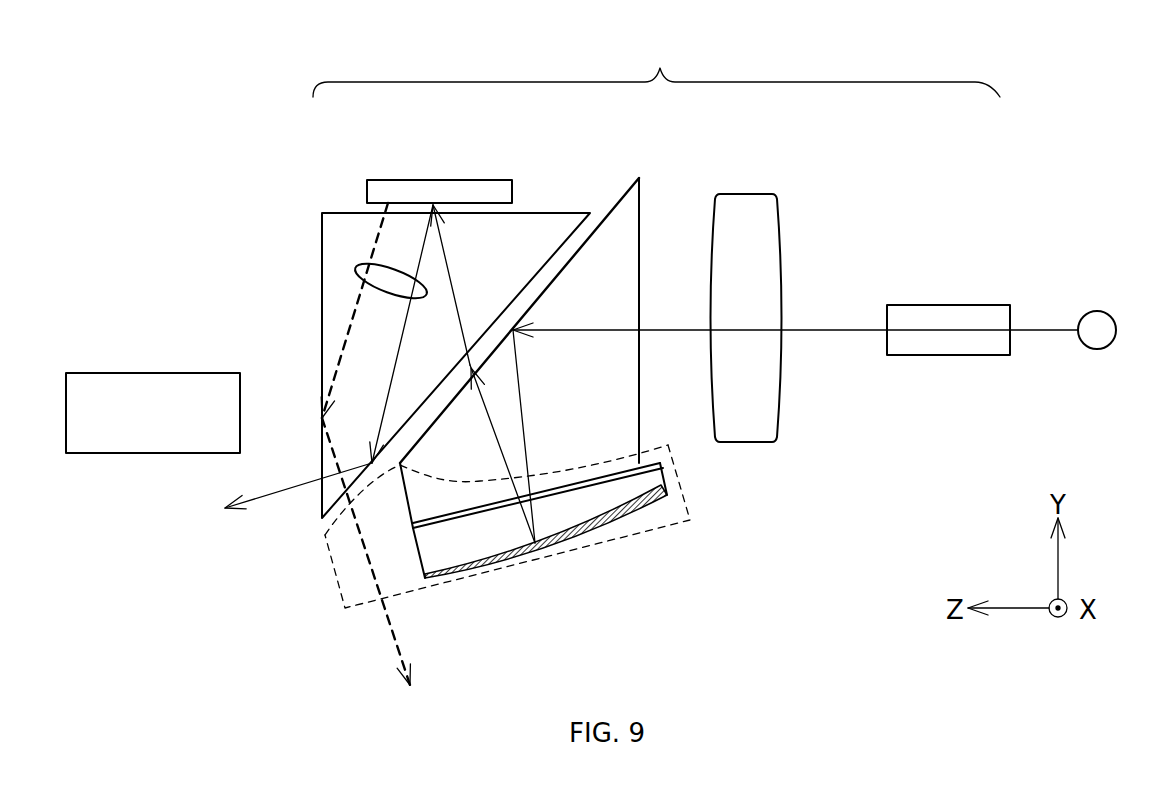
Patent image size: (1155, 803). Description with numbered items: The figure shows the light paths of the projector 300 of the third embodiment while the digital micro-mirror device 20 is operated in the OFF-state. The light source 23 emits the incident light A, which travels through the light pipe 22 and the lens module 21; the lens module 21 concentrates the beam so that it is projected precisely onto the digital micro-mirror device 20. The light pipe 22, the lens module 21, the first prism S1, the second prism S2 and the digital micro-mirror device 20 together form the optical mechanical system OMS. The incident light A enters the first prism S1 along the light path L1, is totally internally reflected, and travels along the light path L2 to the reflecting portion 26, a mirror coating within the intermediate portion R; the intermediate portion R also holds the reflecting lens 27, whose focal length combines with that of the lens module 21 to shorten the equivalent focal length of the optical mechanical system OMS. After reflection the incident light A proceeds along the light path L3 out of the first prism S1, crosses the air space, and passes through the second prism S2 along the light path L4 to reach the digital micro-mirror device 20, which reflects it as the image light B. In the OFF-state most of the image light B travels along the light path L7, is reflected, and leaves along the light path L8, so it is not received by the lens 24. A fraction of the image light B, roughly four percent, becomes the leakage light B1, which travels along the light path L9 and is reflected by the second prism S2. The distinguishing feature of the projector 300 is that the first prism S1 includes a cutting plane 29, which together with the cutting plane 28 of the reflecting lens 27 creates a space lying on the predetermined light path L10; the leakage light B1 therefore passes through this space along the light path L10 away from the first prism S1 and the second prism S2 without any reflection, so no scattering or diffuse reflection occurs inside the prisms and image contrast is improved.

The projector 300 is at (190, 98).
The digital micro-mirror device 20 is at (441, 180).
The lens module 21 is at (748, 194).
The light pipe 22 is at (948, 305).
The light source 23 is at (1100, 311).
The lens 24 is at (139, 428).
The reflecting portion 26 is at (627, 523).
The reflecting lens 27 is at (567, 513).
The cutting plane 28 is at (425, 577).
The cutting plane 29 is at (403, 493).
The optical mechanical system OMS is at (656, 62).
The first prism S1 is at (639, 413).
The second prism S2 is at (322, 259).
The incident light A is at (838, 330).
The image light B is at (355, 268).
The leakage light B1 is at (397, 640).
The intermediate portion R is at (335, 577).
The light path L1 is at (795, 318).
The light path L2 is at (534, 436).
The light path L3 is at (499, 454).
The light path L4 is at (461, 285).
The light path L7 is at (404, 334).
The light path L8 is at (298, 486).
The light path L9 is at (357, 367).
The predetermined light path L10 is at (368, 628).